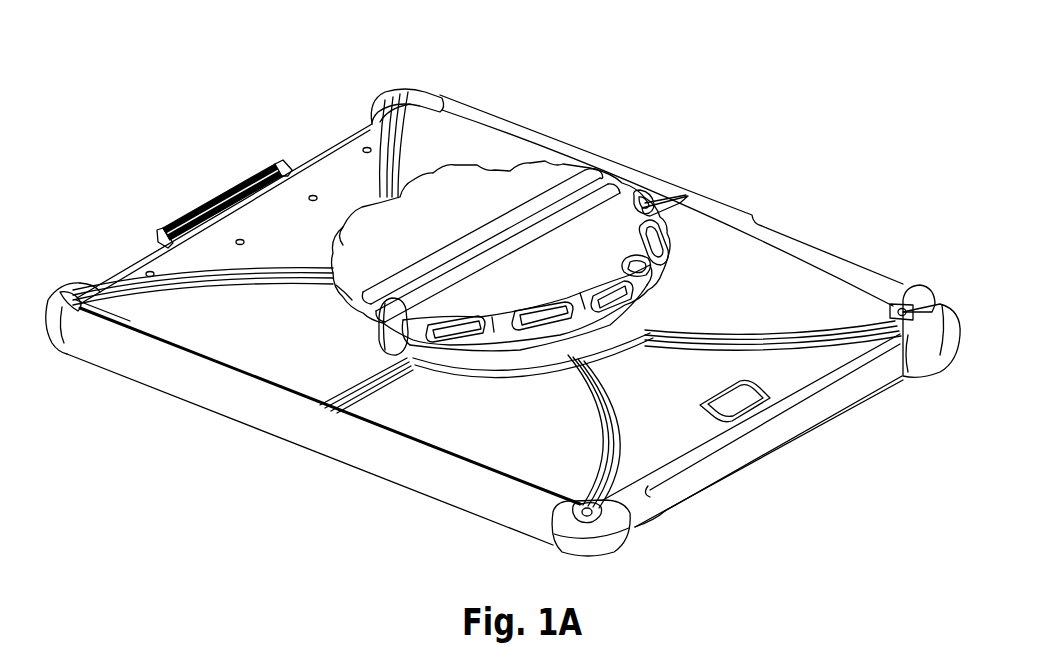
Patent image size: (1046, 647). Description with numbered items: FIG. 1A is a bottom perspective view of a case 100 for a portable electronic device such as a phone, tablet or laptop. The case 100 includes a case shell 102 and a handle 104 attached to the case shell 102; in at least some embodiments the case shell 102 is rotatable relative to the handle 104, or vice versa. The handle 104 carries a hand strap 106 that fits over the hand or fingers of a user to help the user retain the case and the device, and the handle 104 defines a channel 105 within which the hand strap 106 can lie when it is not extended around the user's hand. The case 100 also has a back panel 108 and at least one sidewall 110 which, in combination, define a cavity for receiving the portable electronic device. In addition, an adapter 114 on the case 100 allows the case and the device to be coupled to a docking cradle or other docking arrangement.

The case 100 is at (126, 76).
The case shell 102 is at (110, 345).
The handle 104 is at (485, 180).
The channel 105 is at (567, 205).
The hand strap 106 is at (392, 340).
The back panel 108 is at (770, 287).
The sidewall 110 is at (457, 490).
The adapter 114 is at (200, 210).